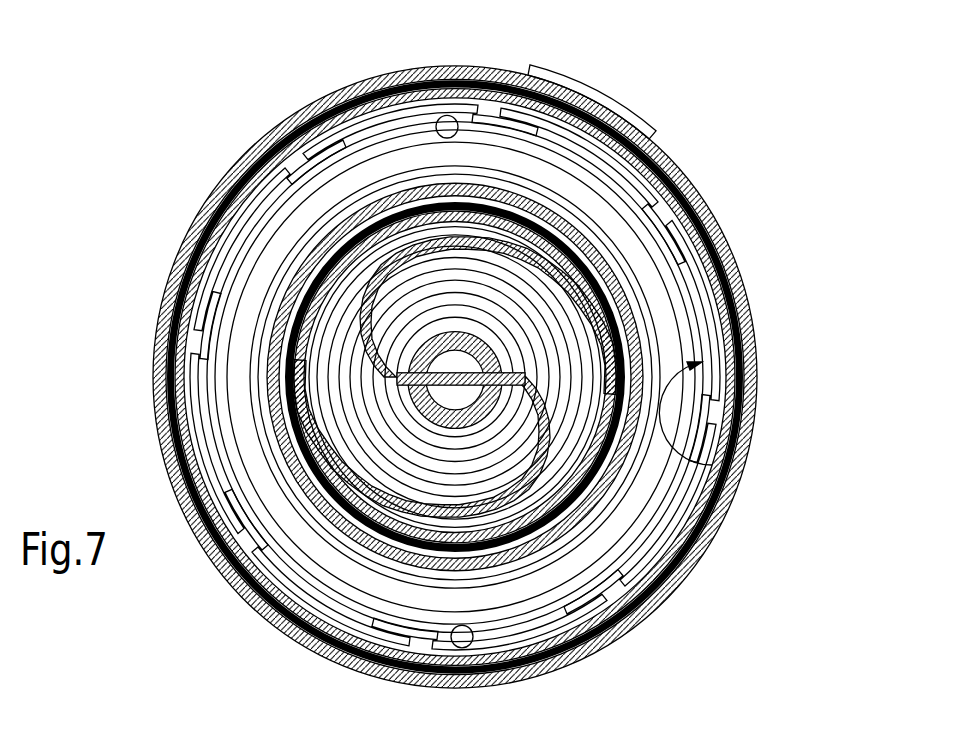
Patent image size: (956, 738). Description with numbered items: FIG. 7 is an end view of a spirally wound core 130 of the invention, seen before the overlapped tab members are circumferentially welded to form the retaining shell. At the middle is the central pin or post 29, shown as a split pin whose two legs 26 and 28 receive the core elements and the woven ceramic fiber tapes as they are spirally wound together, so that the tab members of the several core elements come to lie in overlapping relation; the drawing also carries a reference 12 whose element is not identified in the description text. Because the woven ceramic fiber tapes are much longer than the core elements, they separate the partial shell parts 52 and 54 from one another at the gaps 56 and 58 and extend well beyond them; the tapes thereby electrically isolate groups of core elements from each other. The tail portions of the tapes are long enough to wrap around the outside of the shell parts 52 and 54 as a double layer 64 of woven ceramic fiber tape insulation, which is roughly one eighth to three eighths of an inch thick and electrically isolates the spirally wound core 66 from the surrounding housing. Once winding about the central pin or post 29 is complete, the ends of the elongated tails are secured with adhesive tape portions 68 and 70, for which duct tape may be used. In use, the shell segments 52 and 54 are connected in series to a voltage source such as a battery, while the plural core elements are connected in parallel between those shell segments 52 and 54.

The scroll end plate 12 is at (643, 262).
The leg 26 is at (430, 333).
The leg 28 is at (440, 427).
The central pin or post 29 is at (512, 342).
The shell part 52 is at (690, 455).
The shell part 54 is at (228, 472).
The gap 56 is at (417, 103).
The gap 58 is at (460, 650).
The double layer 64 is at (682, 193).
The spirally wound core 66 is at (603, 500).
The adhesive tape portion 68 is at (558, 67).
The adhesive tape portion 70 is at (305, 660).
The spirally wound core 130 is at (735, 69).